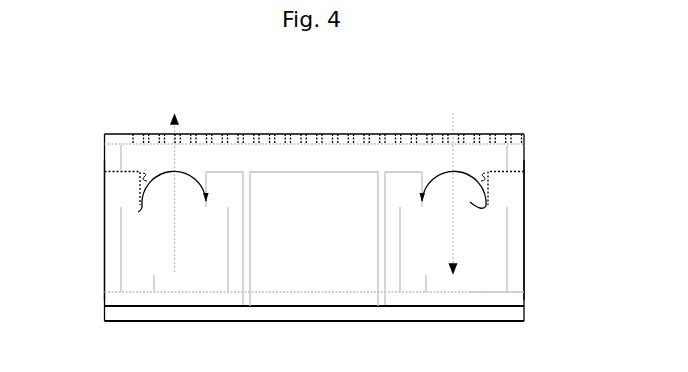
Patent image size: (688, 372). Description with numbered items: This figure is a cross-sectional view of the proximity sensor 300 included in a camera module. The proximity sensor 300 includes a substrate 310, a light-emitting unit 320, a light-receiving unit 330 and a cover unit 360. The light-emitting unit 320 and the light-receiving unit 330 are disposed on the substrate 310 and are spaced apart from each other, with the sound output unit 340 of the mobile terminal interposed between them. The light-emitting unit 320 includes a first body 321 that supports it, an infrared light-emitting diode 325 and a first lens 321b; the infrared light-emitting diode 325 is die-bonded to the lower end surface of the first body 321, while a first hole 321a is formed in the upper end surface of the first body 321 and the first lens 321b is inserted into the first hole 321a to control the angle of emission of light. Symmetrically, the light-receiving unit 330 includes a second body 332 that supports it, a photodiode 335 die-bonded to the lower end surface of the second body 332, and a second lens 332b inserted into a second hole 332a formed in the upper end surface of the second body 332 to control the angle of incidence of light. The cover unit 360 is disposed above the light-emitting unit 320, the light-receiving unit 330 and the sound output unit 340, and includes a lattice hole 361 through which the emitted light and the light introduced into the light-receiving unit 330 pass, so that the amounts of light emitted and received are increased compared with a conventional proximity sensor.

The proximity sensor 300 is at (568, 76).
The substrate 310 is at (353, 313).
The light-emitting unit 320 is at (55, 175).
The first body 321 is at (102, 255).
The first hole 321a is at (140, 181).
The first lens 321b is at (138, 210).
The infrared light-emitting diode 325 is at (155, 285).
The light-receiving unit 330 is at (585, 182).
The second body 332 is at (526, 250).
The second hole 332a is at (487, 178).
The second lens 332b is at (470, 202).
The photodiode 335 is at (473, 285).
The sound output unit 340 is at (309, 297).
The cover unit 360 is at (505, 134).
The lattice hole 361 is at (465, 133).